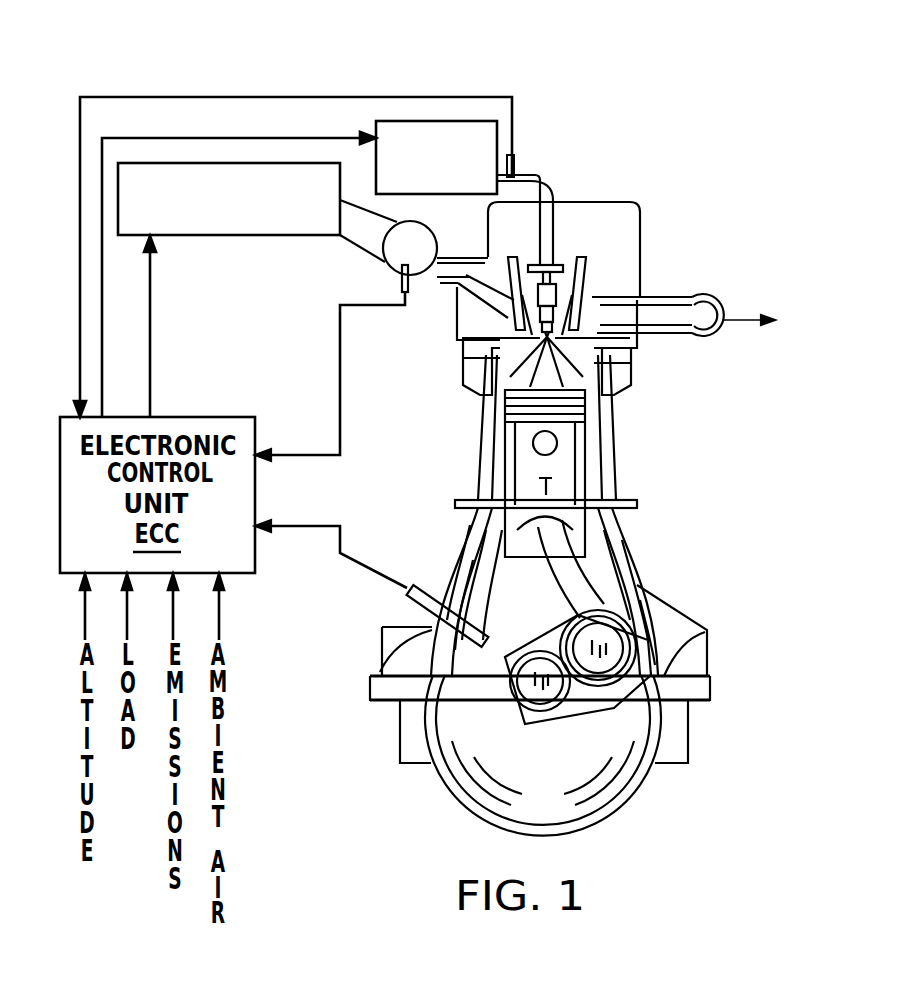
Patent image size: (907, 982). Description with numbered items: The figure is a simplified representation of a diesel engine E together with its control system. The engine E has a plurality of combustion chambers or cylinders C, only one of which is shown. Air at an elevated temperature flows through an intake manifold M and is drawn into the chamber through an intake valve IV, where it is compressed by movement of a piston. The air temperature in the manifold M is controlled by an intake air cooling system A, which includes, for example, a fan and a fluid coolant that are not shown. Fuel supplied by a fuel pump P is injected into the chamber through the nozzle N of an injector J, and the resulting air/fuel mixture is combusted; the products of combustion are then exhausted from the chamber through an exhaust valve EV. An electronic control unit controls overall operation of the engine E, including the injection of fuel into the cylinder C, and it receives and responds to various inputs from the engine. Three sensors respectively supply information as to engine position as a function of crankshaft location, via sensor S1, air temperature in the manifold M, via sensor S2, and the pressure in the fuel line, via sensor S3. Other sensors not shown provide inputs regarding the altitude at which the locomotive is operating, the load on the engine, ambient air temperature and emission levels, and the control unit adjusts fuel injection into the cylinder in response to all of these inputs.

The intake air cooling system A is at (208, 166).
The fuel pump P is at (474, 140).
The fuel line pressure sensor S3 is at (516, 161).
The diesel engine E is at (716, 222).
The cylinder C is at (612, 466).
The injector J is at (560, 262).
The nozzle N is at (467, 347).
The intake valve IV is at (500, 326).
The exhaust valve EV is at (622, 340).
The intake manifold M is at (406, 263).
The manifold air temperature sensor S2 is at (403, 283).
The engine position sensor S1 is at (422, 583).